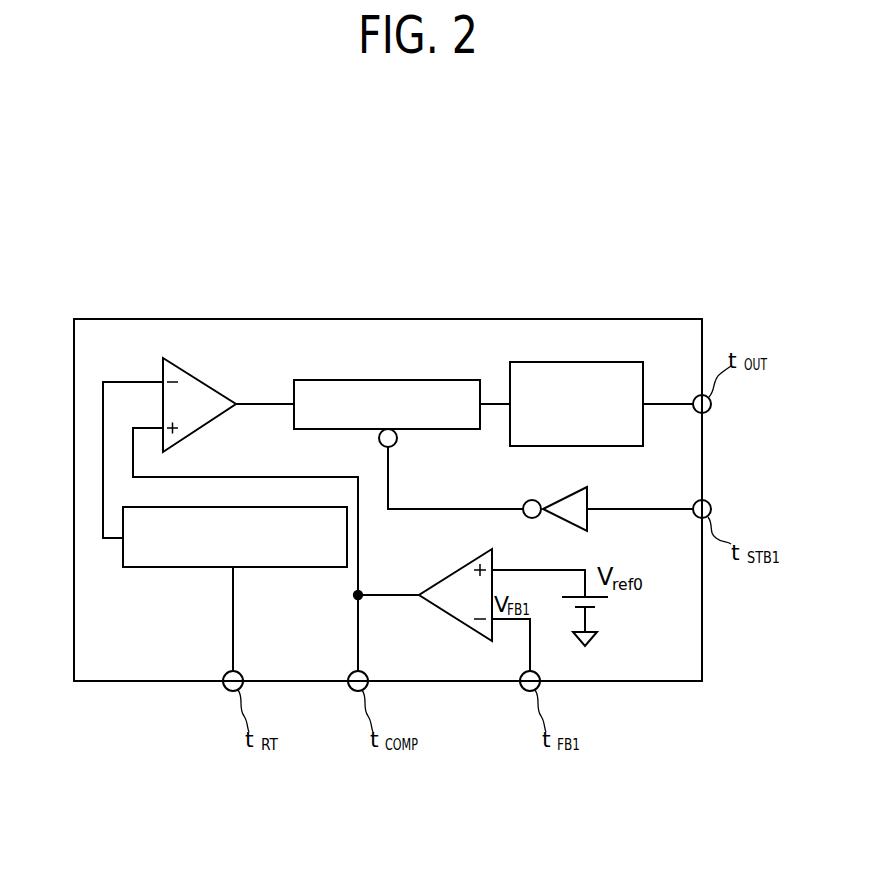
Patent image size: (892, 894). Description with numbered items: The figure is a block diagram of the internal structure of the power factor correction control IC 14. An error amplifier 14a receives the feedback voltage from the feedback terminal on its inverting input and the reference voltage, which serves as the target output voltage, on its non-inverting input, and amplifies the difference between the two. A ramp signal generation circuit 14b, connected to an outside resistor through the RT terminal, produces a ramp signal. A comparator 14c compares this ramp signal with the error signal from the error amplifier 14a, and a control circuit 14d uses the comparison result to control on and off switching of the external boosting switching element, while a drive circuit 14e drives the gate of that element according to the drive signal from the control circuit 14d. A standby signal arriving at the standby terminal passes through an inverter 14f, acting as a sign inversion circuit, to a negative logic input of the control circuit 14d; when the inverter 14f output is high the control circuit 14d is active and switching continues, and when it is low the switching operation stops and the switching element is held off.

The power factor correction control IC 14 is at (162, 319).
The error amplifier 14a is at (457, 615).
The ramp signal generation circuit 14b is at (183, 567).
The comparator 14c is at (208, 385).
The control circuit 14d is at (403, 380).
The drive circuit 14e is at (573, 362).
The inverter 14f is at (586, 492).